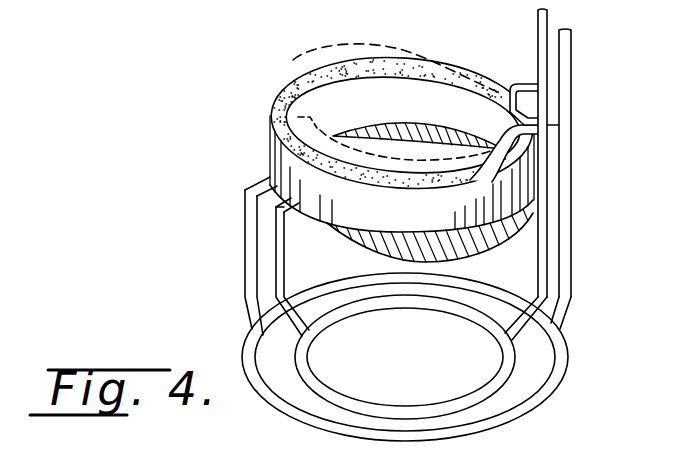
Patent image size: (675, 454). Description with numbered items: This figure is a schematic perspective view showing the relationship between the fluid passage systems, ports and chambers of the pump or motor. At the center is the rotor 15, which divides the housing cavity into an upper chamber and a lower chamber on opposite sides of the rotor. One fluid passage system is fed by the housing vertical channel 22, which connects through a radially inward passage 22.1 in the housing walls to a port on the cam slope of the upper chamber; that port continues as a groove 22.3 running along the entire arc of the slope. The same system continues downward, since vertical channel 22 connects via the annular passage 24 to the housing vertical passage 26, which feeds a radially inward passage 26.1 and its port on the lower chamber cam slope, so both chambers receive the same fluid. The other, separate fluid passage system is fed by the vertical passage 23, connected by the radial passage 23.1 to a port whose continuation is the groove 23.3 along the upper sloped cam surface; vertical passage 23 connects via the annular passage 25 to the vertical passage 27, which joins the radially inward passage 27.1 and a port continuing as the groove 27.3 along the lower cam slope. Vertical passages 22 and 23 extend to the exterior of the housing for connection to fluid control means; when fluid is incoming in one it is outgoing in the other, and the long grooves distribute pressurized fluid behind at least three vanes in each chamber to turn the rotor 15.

The rotor 15 is at (420, 215).
The vertical channel 22 is at (566, 52).
The radially inward passage 22.1 is at (547, 134).
The groove 22.3 is at (334, 132).
The vertical passage 23 is at (537, 17).
The radial passage 23.1 is at (523, 82).
The groove 23.3 is at (397, 46).
The annular passage 24 is at (595, 378).
The annular passage 25 is at (501, 355).
The vertical passage 26 is at (246, 240).
The radially inward passage 26.1 is at (260, 178).
The vertical passage 27 is at (284, 244).
The radially inward passage 27.1 is at (282, 206).
The groove 27.3 is at (326, 1).